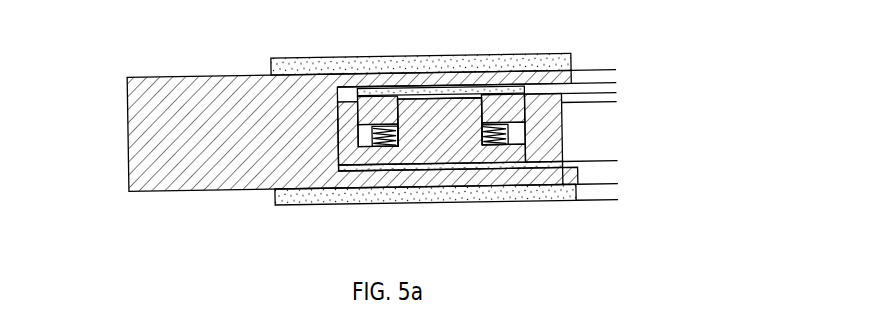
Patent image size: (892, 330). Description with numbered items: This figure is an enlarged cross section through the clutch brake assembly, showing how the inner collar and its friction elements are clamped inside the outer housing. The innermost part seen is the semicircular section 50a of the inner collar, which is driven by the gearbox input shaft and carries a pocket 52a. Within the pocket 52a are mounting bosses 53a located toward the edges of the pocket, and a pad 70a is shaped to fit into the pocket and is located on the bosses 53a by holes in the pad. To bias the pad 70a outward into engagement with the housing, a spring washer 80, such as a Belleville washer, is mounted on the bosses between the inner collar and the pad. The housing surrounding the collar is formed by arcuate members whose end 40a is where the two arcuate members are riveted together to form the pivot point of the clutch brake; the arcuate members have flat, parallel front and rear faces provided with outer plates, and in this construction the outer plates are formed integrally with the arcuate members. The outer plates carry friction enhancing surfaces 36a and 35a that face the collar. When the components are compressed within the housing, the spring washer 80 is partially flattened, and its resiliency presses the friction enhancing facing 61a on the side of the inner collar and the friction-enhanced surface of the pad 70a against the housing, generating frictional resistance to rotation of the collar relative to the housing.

The upper plate 35a is at (562, 56).
The friction enhancing surface 36a is at (510, 195).
The end of arcuate member 40a is at (192, 145).
The semicircular section of inner collar 50a is at (547, 148).
The pocket 52a is at (355, 133).
The mounting boss 53a is at (442, 138).
The friction enhancing facing 61a is at (538, 178).
The pad 70a is at (510, 102).
The spring washer 80 is at (512, 128).